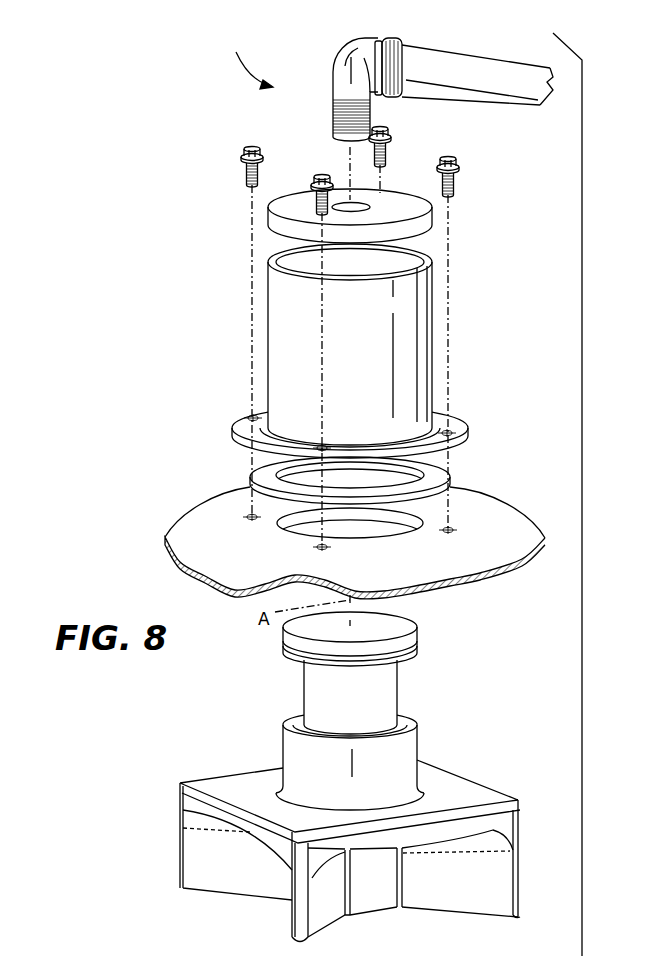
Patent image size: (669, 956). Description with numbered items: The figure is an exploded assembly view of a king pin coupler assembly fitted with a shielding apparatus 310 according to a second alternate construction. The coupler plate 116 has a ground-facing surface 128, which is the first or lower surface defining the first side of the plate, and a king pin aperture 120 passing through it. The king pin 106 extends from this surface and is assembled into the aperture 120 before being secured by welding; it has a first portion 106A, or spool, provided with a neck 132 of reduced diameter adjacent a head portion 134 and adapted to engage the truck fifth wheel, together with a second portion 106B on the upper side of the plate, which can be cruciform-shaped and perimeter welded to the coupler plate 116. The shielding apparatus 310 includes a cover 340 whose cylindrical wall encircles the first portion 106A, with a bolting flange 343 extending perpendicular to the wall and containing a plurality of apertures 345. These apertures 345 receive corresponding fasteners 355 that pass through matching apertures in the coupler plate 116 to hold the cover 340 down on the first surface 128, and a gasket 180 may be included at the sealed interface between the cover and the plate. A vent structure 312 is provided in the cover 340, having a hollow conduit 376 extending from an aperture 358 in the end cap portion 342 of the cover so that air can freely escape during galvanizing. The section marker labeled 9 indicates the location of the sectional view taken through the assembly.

The vent structure 312 is at (239, 59).
The section line for FIG. 9 is at (344, 72).
The hollow conduit 376 is at (410, 76).
The fasteners 355 is at (311, 187).
The aperture 358 is at (345, 203).
The end cap portion 342 is at (432, 222).
The cover 340 is at (420, 346).
The apertures 345 is at (253, 415).
The bolting flange 343 is at (231, 432).
The gasket 180 is at (436, 473).
The coupler plate 116 is at (172, 560).
The ground-facing surface 128 is at (512, 545).
The shielding apparatus 310 is at (584, 513).
The aperture 120 is at (397, 522).
The head portion 134 is at (413, 643).
The neck 132 is at (395, 690).
The king pin 106 is at (96, 745).
The first portion 106A is at (283, 740).
The second portion 106B is at (208, 808).